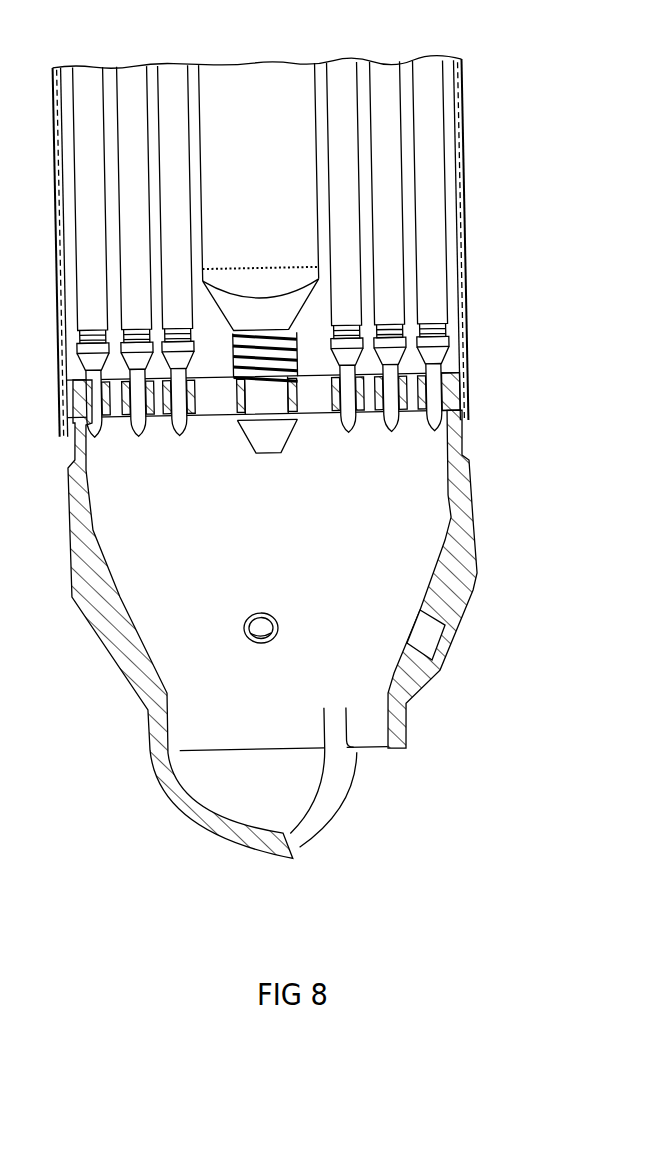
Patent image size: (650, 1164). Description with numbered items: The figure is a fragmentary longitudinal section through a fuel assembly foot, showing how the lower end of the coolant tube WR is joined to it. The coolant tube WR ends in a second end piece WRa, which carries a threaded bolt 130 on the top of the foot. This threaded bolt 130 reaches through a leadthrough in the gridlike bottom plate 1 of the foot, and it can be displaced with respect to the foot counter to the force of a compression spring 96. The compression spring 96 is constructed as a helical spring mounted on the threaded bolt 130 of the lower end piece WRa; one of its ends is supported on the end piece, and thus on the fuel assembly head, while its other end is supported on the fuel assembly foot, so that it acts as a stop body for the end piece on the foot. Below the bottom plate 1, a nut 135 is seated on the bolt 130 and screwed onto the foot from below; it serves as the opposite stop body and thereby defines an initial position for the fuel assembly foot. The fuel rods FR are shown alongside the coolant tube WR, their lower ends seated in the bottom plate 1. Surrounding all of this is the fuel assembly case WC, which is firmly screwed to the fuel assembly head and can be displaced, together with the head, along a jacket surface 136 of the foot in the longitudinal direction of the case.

The coolant tube WR is at (262, 90).
The second end piece WRa is at (245, 310).
The fuel rod FR is at (425, 83).
The fuel assembly case WC is at (460, 178).
The gridlike bottom plate 1 is at (458, 382).
The jacket surface 136 is at (462, 440).
The threaded bolt 130 is at (252, 397).
The compression spring 96 is at (298, 373).
The nut 135 is at (266, 447).